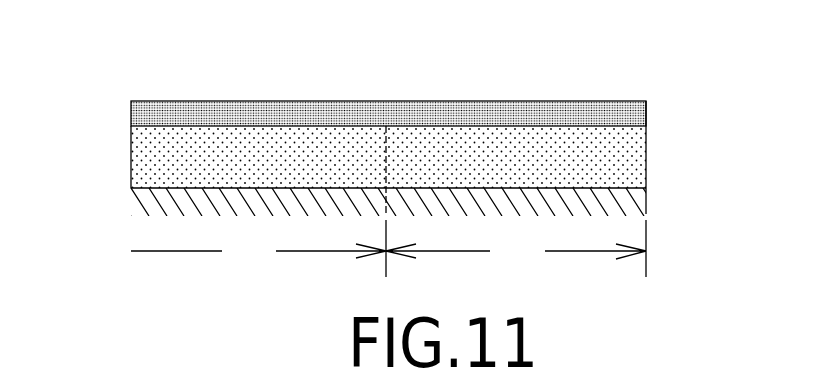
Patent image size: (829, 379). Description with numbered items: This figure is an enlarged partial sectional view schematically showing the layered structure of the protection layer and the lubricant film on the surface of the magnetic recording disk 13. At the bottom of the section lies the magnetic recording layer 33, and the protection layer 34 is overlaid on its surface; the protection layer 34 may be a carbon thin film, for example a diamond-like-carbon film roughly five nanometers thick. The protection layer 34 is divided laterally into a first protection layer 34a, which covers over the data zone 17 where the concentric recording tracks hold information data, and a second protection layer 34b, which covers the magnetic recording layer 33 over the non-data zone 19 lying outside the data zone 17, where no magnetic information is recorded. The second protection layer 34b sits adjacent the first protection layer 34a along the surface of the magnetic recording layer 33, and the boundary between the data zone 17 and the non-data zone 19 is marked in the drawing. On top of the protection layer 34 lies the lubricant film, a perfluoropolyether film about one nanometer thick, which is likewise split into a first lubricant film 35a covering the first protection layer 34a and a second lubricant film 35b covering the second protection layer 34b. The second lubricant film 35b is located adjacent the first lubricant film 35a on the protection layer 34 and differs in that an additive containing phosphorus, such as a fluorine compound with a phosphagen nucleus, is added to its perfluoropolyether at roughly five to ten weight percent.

The magnetic recording disk 13 is at (396, 112).
The magnetic recording layer 33 is at (153, 188).
The protection layer 34 is at (399, 158).
The first protection layer 34a is at (153, 127).
The second protection layer 34b is at (621, 127).
The first lubricant film 35a is at (163, 101).
The second lubricant film 35b is at (625, 101).
The data zone 17 is at (258, 253).
The non-data zone 19 is at (516, 248).